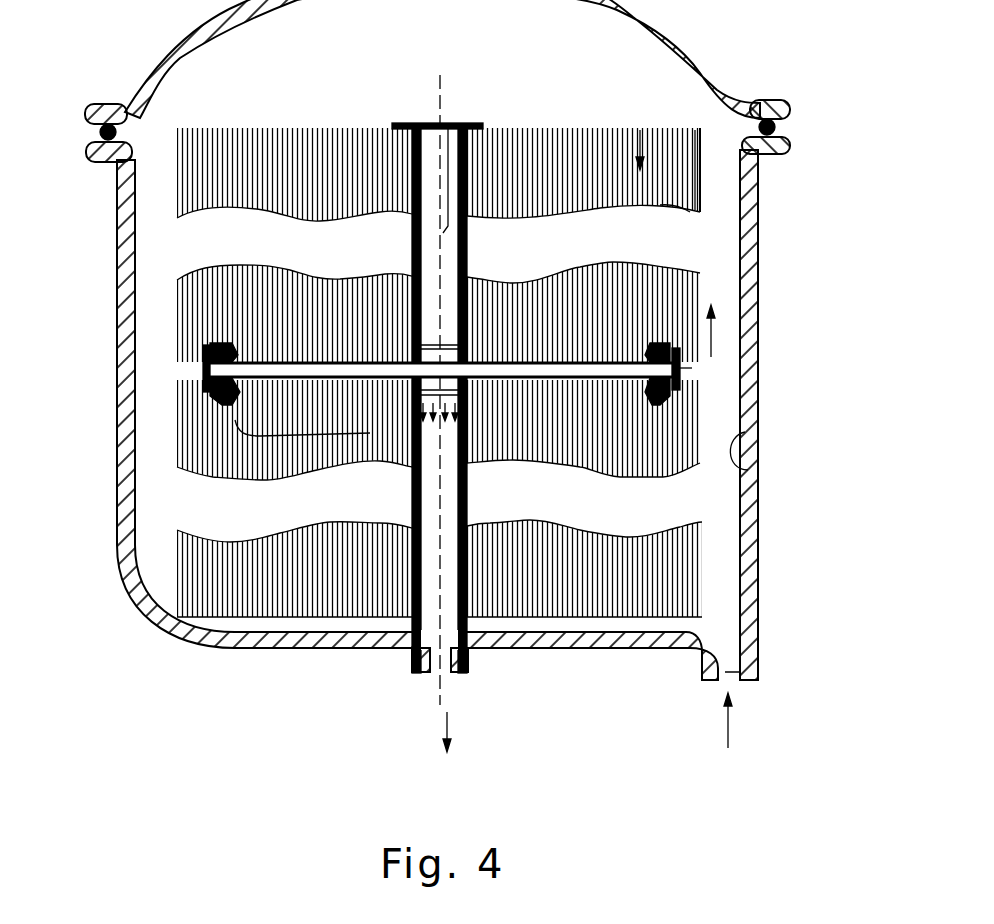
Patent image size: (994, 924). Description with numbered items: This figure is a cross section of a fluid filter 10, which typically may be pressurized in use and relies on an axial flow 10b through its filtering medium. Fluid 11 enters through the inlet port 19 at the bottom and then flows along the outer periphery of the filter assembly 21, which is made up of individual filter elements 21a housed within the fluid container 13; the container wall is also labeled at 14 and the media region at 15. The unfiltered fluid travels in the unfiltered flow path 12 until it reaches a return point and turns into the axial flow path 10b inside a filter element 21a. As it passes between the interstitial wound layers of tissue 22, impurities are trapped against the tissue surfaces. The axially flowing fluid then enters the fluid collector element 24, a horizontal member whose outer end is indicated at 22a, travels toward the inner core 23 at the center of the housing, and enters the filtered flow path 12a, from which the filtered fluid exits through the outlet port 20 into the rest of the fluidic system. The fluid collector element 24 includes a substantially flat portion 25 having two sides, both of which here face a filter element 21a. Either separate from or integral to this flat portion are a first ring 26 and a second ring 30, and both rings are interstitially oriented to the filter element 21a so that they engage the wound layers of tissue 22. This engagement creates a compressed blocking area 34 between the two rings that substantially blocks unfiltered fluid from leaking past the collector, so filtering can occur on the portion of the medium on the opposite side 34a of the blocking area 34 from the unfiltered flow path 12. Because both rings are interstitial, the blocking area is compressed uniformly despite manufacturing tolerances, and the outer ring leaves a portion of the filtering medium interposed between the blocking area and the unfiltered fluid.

The fluid filter 10 is at (117, 312).
The axial flow path 10b is at (713, 145).
The fluid 11 is at (730, 738).
The unfiltered flow path 12 is at (725, 331).
The filtered flow path 12a is at (442, 430).
The fluid container 13 is at (745, 440).
The housing body 14 is at (754, 468).
The filter media 15 is at (700, 290).
The inlet port 19 is at (742, 672).
The outlet port 20 is at (467, 655).
The filter assembly 21 is at (700, 165).
The filter element 21a is at (700, 185).
The wound layers of tissue 22 is at (700, 200).
The support end 22a is at (690, 378).
The inner core 23 is at (440, 128).
The fluid collector element 24 is at (203, 376).
The substantially flat portion 25 is at (300, 437).
The first ring 26 is at (228, 378).
The second ring 30 is at (233, 412).
The blocking area 34 is at (203, 362).
The opposite side 34a is at (235, 436).